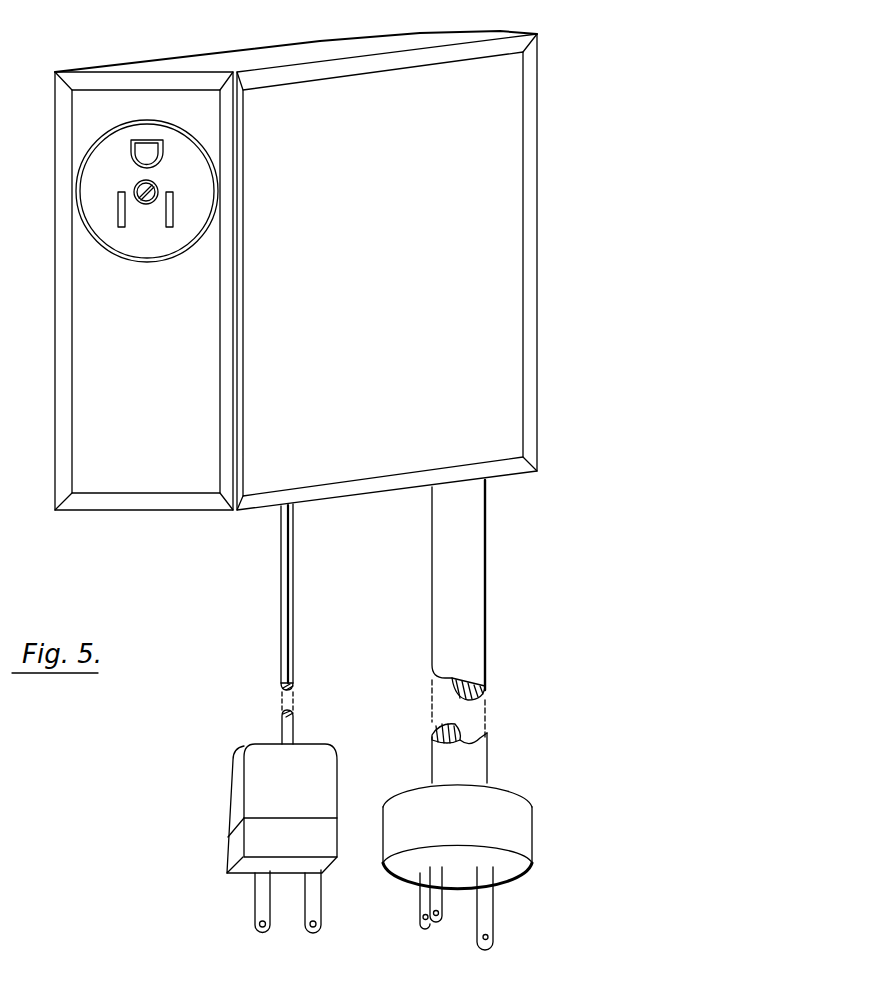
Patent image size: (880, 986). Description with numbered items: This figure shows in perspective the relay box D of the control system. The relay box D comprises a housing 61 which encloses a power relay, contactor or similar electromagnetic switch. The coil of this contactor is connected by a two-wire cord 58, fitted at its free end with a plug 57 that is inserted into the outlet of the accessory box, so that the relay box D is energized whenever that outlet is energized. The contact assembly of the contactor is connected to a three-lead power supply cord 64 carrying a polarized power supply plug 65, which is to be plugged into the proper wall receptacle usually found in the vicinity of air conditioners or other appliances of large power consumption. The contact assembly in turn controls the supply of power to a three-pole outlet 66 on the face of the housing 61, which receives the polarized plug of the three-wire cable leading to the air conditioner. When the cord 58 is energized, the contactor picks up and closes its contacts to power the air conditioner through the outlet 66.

The housing 61 is at (263, 60).
The relay box D is at (495, 217).
The three-pole outlet 66 is at (103, 213).
The two-wire cord 58 is at (289, 645).
The plug 57 is at (238, 772).
The three-lead power supply cord 64 is at (475, 635).
The polarized power supply plug 65 is at (518, 846).